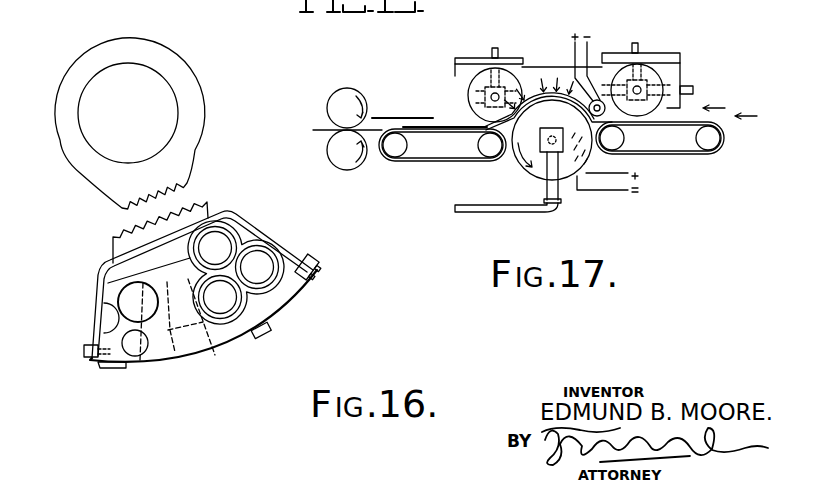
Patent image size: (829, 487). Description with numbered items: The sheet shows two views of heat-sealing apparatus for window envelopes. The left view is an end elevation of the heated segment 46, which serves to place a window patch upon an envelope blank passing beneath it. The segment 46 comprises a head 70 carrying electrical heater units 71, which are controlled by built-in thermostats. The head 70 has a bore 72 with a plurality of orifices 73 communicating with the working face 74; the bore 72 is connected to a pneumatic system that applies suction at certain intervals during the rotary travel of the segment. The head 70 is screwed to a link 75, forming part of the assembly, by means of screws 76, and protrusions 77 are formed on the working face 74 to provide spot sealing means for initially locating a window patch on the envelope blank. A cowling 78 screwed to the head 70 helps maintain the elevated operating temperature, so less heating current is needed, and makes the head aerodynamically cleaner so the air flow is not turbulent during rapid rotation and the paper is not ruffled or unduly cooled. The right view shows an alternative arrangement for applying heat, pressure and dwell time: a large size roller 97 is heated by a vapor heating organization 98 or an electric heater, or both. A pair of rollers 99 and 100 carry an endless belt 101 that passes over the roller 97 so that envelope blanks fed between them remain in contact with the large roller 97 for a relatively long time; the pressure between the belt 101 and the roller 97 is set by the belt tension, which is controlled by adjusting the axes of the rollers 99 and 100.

In FIG. 16, the segment 46 is at (216, 209).
In FIG. 16, the head 70 is at (280, 253).
In FIG. 16, the electrical heater units 71 is at (198, 275).
In FIG. 16, the bore 72 is at (143, 357).
In FIG. 16, the orifices 73 is at (137, 360).
In FIG. 16, the working face 74 is at (223, 347).
In FIG. 16, the link 75 is at (208, 204).
In FIG. 16, the screws 76 is at (191, 317).
In FIG. 16, the protrusions 77 is at (98, 368).
In FIG. 16, the cowling 78 is at (237, 214).
In FIG. 17, the large size roller 97 is at (524, 172).
In FIG. 17, the vapor heating organization 98 is at (508, 214).
In FIG. 17, the roller 99 is at (516, 108).
In FIG. 17, the roller 100 is at (613, 76).
In FIG. 17, the endless belt 101 is at (576, 42).